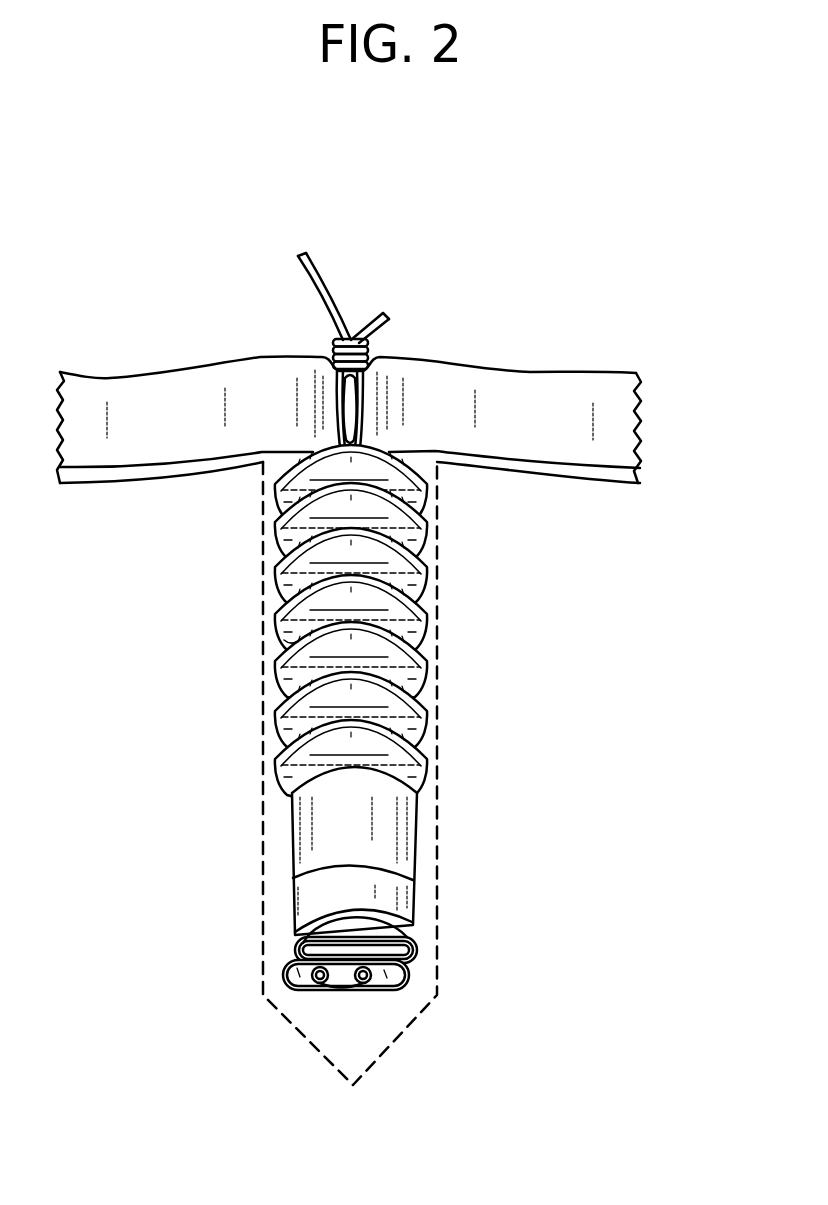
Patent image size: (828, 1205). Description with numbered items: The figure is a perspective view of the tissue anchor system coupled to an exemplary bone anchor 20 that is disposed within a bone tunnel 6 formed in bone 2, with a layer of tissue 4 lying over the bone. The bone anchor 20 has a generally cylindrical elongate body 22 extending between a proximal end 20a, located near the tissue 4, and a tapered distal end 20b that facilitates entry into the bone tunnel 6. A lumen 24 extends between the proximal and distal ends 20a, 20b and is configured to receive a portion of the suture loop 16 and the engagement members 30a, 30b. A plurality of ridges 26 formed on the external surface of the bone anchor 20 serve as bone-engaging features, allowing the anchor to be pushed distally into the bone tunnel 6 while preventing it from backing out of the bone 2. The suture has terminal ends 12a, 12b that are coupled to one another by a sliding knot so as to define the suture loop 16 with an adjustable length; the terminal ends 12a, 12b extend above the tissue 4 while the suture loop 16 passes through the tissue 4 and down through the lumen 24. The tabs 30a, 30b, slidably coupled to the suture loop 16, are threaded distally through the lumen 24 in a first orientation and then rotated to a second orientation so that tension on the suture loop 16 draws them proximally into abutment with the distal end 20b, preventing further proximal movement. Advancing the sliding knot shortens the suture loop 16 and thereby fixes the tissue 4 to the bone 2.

The bone 2 is at (607, 634).
The tissue 4 is at (616, 400).
The bone tunnel 6 is at (263, 898).
The terminal end of suture 12a is at (309, 278).
The terminal end of suture 12b is at (372, 329).
The suture loop 16 is at (363, 410).
The bone anchor 20 is at (395, 827).
The proximal end 20a is at (268, 474).
The tapered distal end 20b is at (413, 928).
The elongate body 22 is at (290, 640).
The lumen 24 is at (352, 930).
The ridges 26 is at (430, 683).
The engagement member 30a is at (404, 977).
The engagement member 30b is at (420, 957).